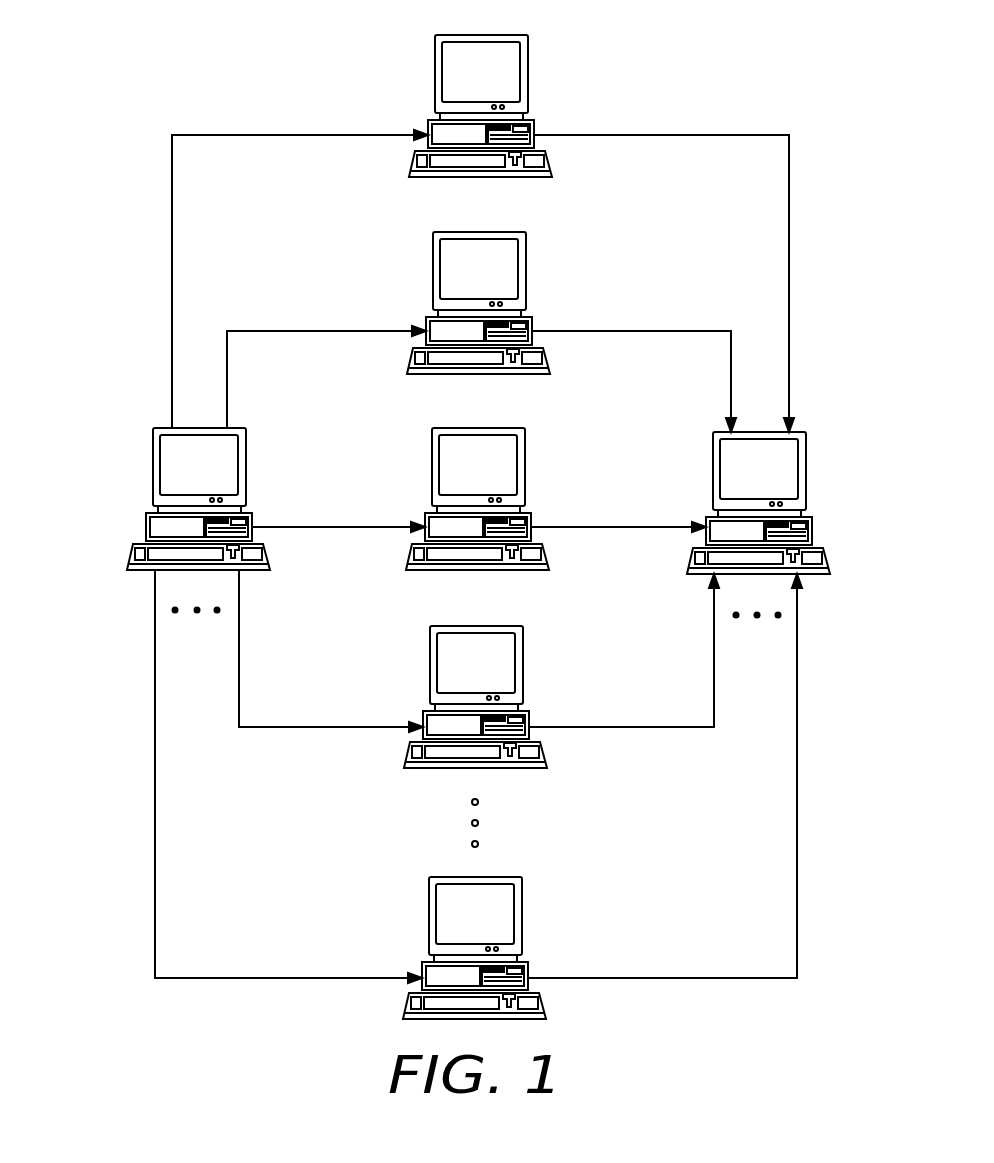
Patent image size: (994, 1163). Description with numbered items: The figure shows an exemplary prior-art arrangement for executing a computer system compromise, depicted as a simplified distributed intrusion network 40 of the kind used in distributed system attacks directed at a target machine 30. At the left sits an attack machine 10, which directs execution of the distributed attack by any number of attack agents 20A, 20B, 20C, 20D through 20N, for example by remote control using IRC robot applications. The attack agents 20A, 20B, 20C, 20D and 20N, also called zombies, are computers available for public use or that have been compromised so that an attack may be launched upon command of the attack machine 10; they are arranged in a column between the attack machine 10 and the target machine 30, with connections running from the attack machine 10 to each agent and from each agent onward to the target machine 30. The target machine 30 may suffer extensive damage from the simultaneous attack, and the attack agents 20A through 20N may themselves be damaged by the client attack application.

The attack machine 10 is at (154, 455).
The attack agent 20A is at (528, 75).
The attack agent 20B is at (526, 280).
The attack agent 20C is at (525, 478).
The attack agent 20D is at (523, 674).
The attack agent 20N is at (522, 920).
The target machine 30 is at (806, 478).
The distributed intrusion network 40 is at (199, 87).